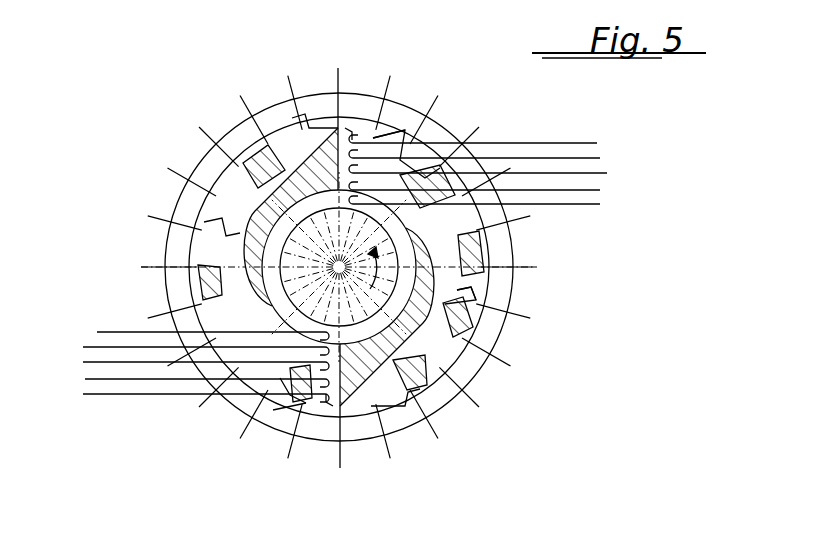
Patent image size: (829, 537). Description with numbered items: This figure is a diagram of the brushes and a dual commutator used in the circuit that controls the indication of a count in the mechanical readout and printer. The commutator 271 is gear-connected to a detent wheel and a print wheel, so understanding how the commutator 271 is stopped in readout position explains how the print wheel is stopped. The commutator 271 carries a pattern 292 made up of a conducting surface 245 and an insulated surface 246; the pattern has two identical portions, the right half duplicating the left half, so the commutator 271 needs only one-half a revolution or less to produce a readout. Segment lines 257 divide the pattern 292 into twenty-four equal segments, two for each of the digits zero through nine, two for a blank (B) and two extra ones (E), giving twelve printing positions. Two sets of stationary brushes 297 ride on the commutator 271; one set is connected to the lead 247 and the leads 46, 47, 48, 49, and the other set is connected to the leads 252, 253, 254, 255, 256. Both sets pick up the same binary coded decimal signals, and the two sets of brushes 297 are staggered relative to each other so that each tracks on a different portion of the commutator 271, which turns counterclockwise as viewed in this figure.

The commutator 271 is at (258, 100).
The stationary brushes 297 is at (350, 124).
The segment lines 257 is at (390, 84).
The lead 256 is at (597, 143).
The lead 255 is at (600, 158).
The lead 254 is at (607, 173).
The lead 253 is at (600, 190).
The lead 252 is at (600, 204).
The lead 247 is at (100, 332).
The lead 46 is at (97, 347).
The lead 47 is at (97, 362).
The lead 48 is at (97, 379).
The lead 49 is at (97, 394).
The insulated surface 246 is at (493, 257).
The conducting surface 245 is at (472, 290).
The pattern 292 is at (492, 350).